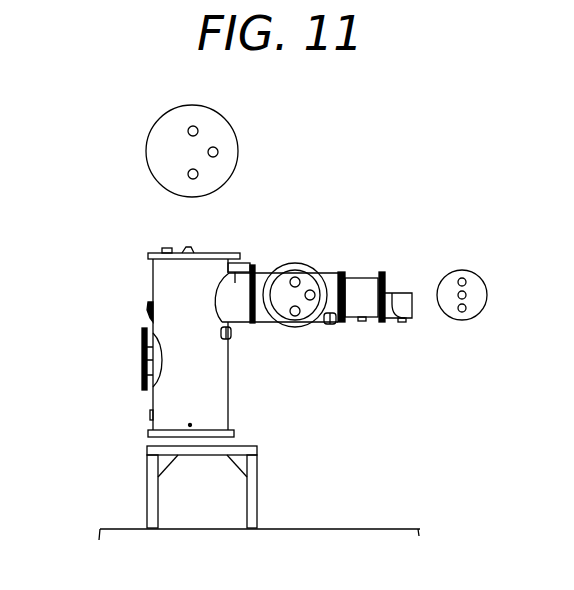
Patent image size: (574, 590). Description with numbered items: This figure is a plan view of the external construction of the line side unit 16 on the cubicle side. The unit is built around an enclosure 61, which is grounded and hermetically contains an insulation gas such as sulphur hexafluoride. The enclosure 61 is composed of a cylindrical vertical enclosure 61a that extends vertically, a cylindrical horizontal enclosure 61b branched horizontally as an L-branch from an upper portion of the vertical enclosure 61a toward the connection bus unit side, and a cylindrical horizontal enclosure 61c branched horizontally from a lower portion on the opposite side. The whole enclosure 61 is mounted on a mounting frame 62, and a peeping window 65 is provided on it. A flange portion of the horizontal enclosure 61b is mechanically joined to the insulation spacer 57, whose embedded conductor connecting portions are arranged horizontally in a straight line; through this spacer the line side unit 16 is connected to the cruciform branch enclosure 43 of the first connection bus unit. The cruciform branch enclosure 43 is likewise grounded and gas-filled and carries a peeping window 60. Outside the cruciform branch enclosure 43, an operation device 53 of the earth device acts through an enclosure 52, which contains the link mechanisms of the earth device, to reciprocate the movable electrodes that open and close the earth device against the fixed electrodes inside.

The line side unit 16 is at (110, 256).
The cruciform branch enclosure 43 is at (328, 272).
The enclosure 52 is at (377, 272).
The operation device 53 is at (397, 292).
The insulation spacer 57 is at (253, 265).
The peeping window 60 is at (331, 323).
The enclosure 61 is at (212, 413).
The vertical enclosure 61a is at (229, 388).
The horizontal enclosure 61b is at (236, 283).
The horizontal enclosure 61c is at (147, 362).
The mounting frame 62 is at (257, 495).
The peeping window 65 is at (231, 335).